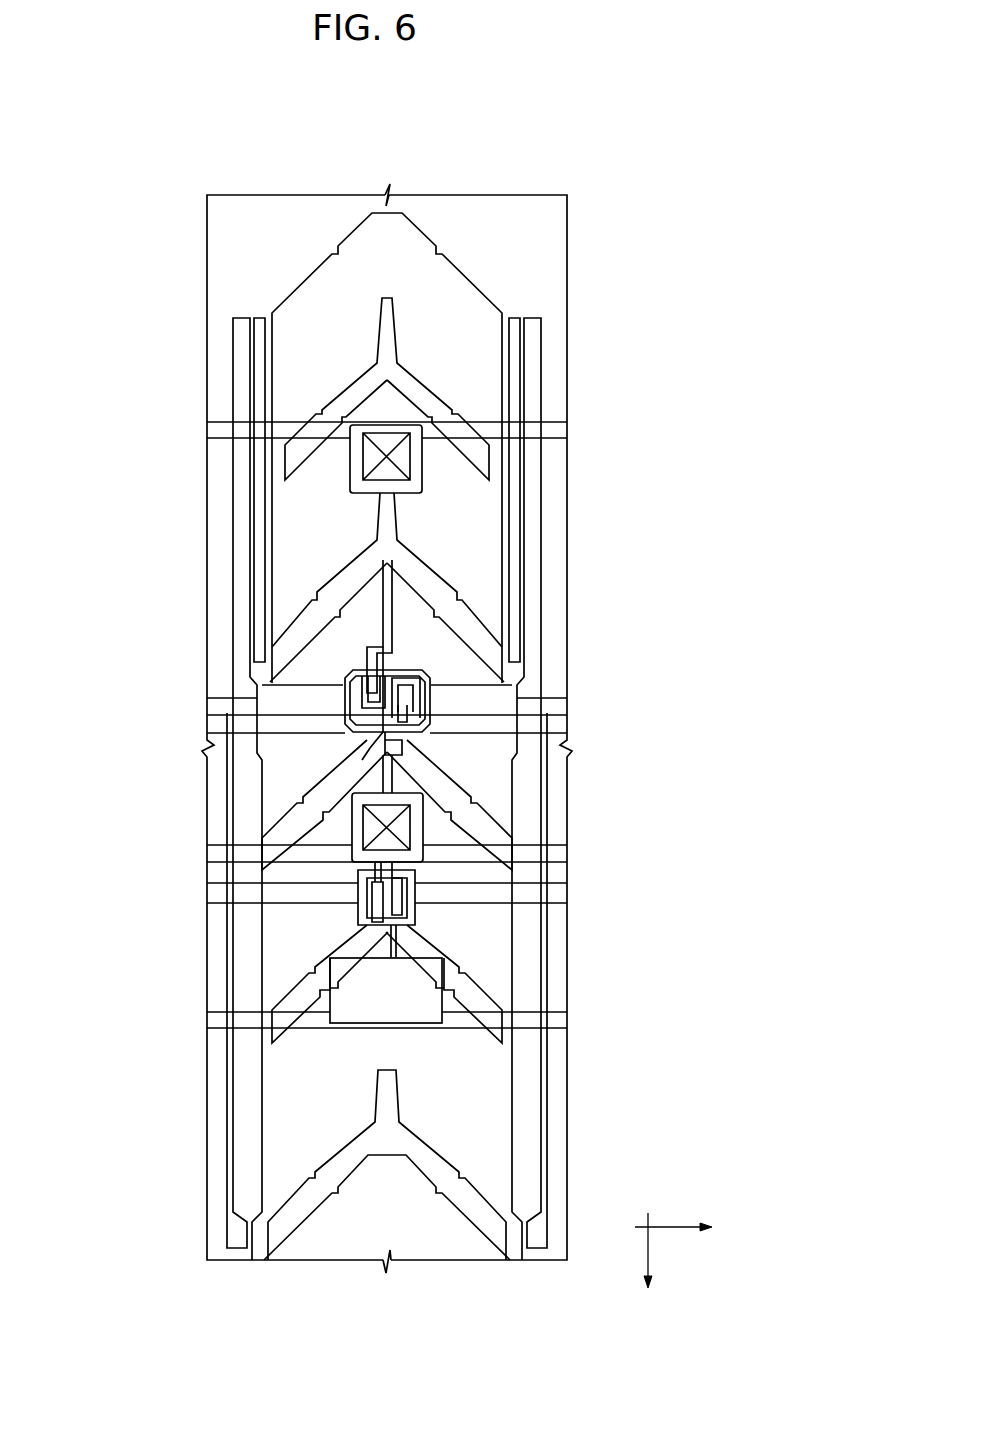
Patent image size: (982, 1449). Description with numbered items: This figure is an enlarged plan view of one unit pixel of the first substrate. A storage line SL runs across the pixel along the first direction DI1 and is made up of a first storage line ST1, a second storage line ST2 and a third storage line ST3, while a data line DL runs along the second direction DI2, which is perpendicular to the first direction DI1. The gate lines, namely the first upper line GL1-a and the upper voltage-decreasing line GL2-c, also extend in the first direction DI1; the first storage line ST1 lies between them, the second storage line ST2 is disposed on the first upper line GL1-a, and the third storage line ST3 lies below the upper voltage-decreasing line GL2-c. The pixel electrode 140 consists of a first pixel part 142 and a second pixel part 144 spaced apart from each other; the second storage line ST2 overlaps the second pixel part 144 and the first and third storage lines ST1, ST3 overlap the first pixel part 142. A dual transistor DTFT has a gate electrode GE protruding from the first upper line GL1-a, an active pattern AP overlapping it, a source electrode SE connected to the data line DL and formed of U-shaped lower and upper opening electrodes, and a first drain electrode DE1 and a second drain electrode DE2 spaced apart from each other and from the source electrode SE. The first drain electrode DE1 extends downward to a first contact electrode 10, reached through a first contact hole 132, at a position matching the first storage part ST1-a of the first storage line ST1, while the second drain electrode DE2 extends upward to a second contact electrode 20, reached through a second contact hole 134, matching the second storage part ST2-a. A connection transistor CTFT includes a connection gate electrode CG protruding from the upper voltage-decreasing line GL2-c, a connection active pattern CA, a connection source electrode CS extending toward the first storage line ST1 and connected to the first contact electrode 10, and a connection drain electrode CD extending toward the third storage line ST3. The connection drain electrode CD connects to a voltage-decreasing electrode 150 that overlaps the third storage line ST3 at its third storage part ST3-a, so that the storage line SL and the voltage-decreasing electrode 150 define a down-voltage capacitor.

The storage line SL is at (120, 410).
The second storage line ST2 is at (212, 431).
The second contact electrode 20 is at (422, 446).
The second contact hole 134 is at (410, 472).
The second storage part ST2-a is at (422, 484).
The pixel electrode 140 is at (125, 582).
The second pixel part 144 is at (282, 593).
The first pixel part 142 is at (322, 642).
The data line DL is at (535, 608).
The gate electrode GE is at (348, 671).
The second drain electrode DE2 is at (348, 684).
The source electrode SE is at (358, 715).
The active pattern AP is at (372, 742).
The first drain electrode DE1 is at (388, 753).
The dual transistor DTFT is at (125, 670).
The first upper line GL1-a is at (553, 710).
The first storage part ST1-a is at (435, 775).
The first contact electrode 10 is at (423, 812).
The first contact hole 132 is at (410, 833).
The first storage line ST1 is at (212, 853).
The connection source electrode CS is at (375, 868).
The connection active pattern CA is at (358, 892).
The connection gate electrode CG is at (367, 913).
The connection drain electrode CD is at (387, 930).
The connection transistor CTFT is at (125, 880).
The upper voltage-decreasing line GL2-c is at (553, 897).
The third storage part ST3-a is at (440, 938).
The voltage-decreasing electrode 150 is at (447, 970).
The third storage line ST3 is at (212, 1019).
The first direction DI1 is at (694, 1226).
The second direction DI2 is at (646, 1279).